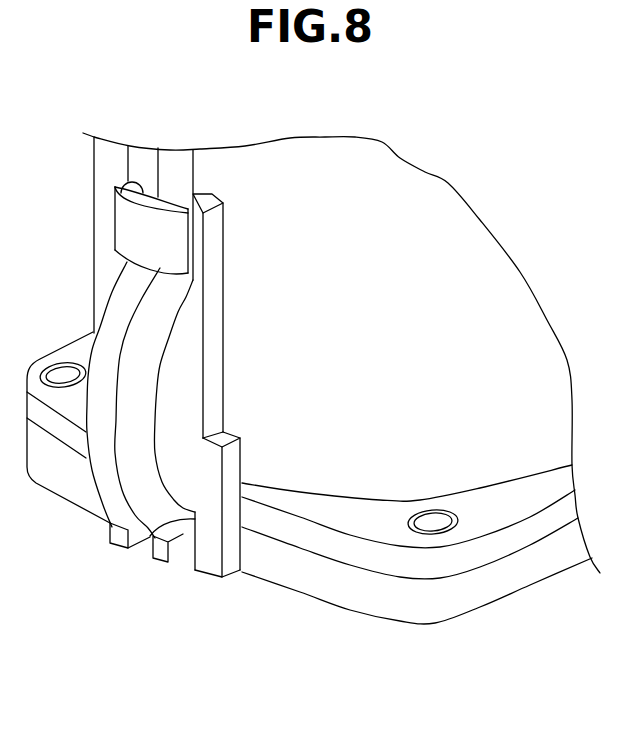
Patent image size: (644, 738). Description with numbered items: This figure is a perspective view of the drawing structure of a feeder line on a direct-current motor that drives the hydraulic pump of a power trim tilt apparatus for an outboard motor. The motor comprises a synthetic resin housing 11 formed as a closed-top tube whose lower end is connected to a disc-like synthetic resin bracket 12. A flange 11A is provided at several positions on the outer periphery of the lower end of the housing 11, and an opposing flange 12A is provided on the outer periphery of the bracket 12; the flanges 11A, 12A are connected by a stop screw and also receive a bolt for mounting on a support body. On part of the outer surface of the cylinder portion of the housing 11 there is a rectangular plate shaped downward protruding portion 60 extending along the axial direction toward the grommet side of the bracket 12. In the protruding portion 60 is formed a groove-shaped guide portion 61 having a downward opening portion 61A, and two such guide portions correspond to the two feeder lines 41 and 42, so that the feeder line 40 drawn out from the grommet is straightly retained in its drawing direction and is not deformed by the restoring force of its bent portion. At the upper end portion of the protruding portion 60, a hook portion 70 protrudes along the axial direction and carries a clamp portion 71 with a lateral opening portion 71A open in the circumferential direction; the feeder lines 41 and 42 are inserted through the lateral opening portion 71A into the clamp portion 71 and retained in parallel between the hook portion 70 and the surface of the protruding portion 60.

The housing 11 is at (367, 146).
The flange 11A is at (487, 500).
The bracket 12 is at (530, 585).
The flange 12A is at (427, 612).
The feeder line 40 is at (98, 316).
The feeder line 41 is at (128, 290).
The feeder line 42 is at (165, 322).
The protruding portion 60 is at (222, 379).
The guide portion 61 is at (153, 536).
The downward opening portion 61A is at (192, 562).
The hook portion 70 is at (104, 229).
The clamp portion 71 is at (131, 174).
The lateral opening portion 71A is at (200, 243).